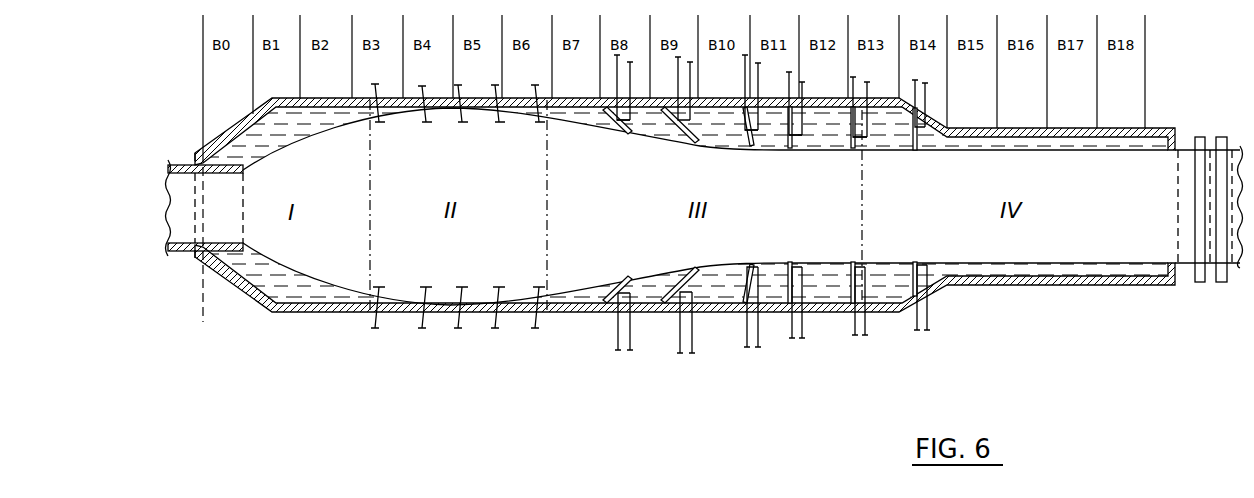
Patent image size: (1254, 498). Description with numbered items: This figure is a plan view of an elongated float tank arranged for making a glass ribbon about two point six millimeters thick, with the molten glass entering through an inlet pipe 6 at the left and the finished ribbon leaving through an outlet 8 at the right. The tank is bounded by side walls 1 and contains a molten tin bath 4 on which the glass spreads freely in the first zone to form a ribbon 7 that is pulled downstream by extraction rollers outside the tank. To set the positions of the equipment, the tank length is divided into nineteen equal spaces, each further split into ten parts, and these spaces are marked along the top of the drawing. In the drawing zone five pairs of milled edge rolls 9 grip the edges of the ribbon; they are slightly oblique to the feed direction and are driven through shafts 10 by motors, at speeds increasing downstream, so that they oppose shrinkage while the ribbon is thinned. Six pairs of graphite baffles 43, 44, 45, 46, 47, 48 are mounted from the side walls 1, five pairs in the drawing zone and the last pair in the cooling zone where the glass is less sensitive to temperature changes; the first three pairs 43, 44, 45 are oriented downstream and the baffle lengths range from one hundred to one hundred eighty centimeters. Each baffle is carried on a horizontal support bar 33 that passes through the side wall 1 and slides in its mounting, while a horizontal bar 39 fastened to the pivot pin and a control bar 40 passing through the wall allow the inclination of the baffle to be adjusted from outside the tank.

The side walls 1 is at (333, 97).
The molten tin bath 4 is at (582, 300).
The inlet pipe 6 is at (190, 258).
The ribbon 7 is at (1100, 253).
The outlet pipe 8 is at (1220, 284).
The edge rolls 9 is at (459, 126).
The shafts 10 is at (458, 94).
The horizontal support bar 33 is at (789, 84).
The horizontal bar 39 is at (632, 120).
The control bar 40 is at (802, 86).
The baffles 43 is at (621, 134).
The baffles 44 is at (686, 142).
The baffles 45 is at (748, 145).
The baffles 46 is at (790, 147).
The baffles 47 is at (852, 140).
The baffles 48 is at (913, 145).